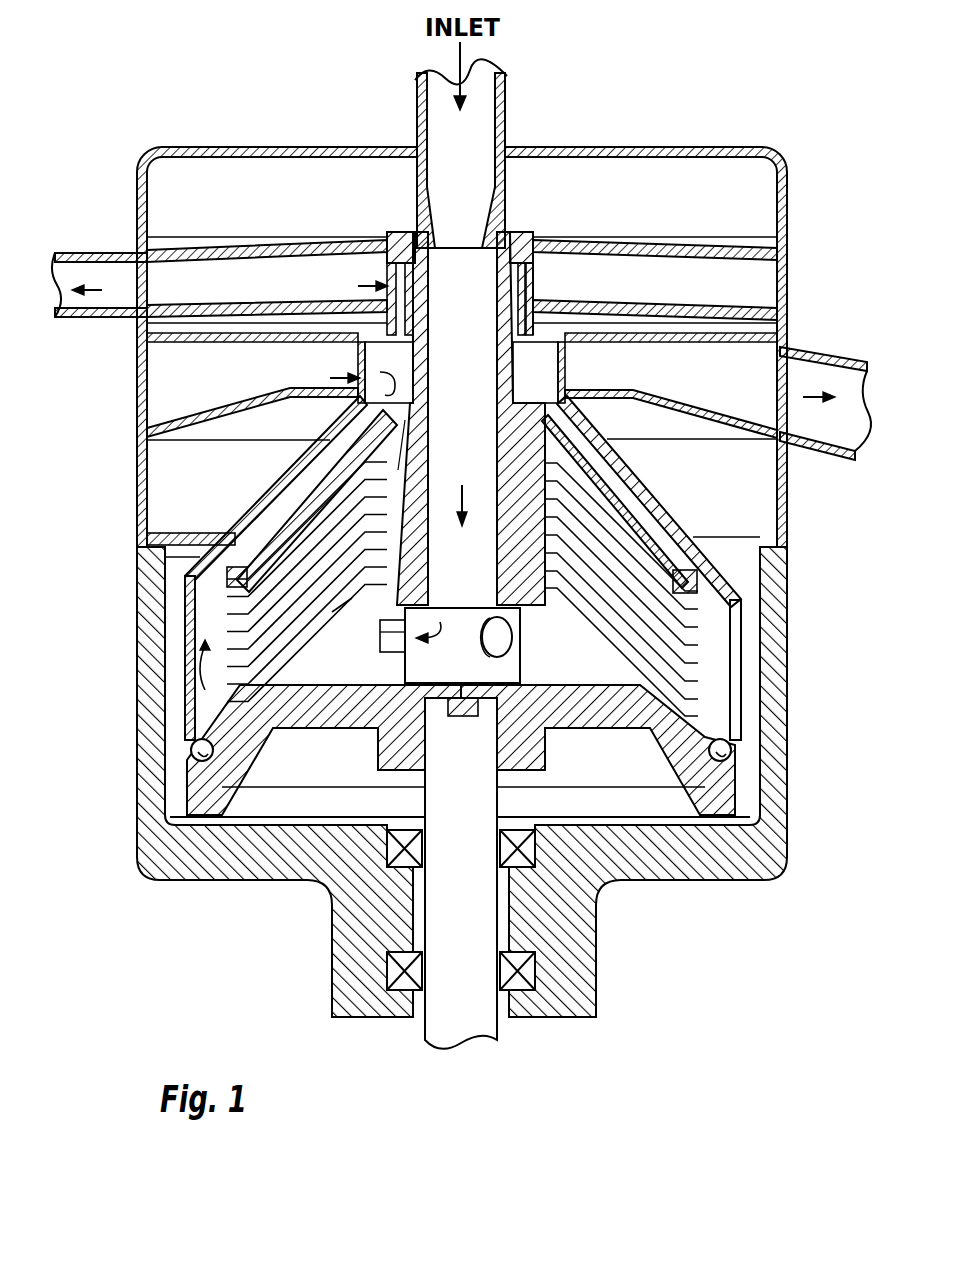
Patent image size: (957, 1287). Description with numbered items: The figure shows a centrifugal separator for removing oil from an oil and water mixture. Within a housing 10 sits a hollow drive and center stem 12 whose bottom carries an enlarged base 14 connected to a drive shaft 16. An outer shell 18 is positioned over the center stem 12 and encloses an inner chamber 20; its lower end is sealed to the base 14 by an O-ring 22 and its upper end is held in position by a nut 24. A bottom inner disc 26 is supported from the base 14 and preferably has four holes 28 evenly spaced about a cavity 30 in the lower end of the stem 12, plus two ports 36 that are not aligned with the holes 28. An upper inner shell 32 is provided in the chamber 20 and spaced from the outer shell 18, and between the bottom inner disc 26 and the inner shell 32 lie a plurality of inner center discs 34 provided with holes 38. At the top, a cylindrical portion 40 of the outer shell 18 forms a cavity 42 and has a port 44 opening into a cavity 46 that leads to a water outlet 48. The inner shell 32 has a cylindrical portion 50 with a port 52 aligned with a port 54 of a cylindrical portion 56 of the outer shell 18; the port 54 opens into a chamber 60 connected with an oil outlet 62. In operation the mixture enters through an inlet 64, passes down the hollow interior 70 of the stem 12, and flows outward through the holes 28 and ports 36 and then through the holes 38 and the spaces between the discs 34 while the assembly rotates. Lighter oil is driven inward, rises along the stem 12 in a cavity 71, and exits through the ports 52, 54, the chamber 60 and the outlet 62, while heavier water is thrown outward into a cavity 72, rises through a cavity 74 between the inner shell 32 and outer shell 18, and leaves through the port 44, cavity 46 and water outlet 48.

The housing 10 is at (150, 767).
The drive and center stem 12 is at (503, 234).
The enlarged base 14 is at (608, 722).
The drive shaft 16 is at (478, 1040).
The outer shell 18 is at (249, 542).
The inner chamber 20 is at (609, 460).
The O-ring 22 is at (733, 742).
The nut 24 is at (528, 236).
The bottom inner disc 26 is at (620, 662).
The holes 28 is at (406, 648).
The cavity 30 is at (512, 664).
The upper inner shell 32 is at (292, 515).
The inner center discs 34 is at (627, 555).
The ports 36 is at (340, 628).
The holes 38 is at (330, 605).
The cylindrical portion 40 is at (563, 360).
The cavity 42 is at (560, 378).
The port 44 is at (358, 360).
The cavity 46 is at (185, 413).
The water outlet 48 is at (838, 352).
The cylindrical portion 50 is at (535, 302).
The port 52 is at (395, 236).
The port 54 is at (395, 282).
The cylindrical portion 56 is at (535, 278).
The chamber 60 is at (215, 303).
The oil outlet 62 is at (125, 250).
The inlet 64 is at (418, 120).
The hollow interior 70 is at (458, 486).
The cavity 71 is at (408, 448).
The cavity 72 is at (207, 683).
The cavity 74 is at (307, 474).